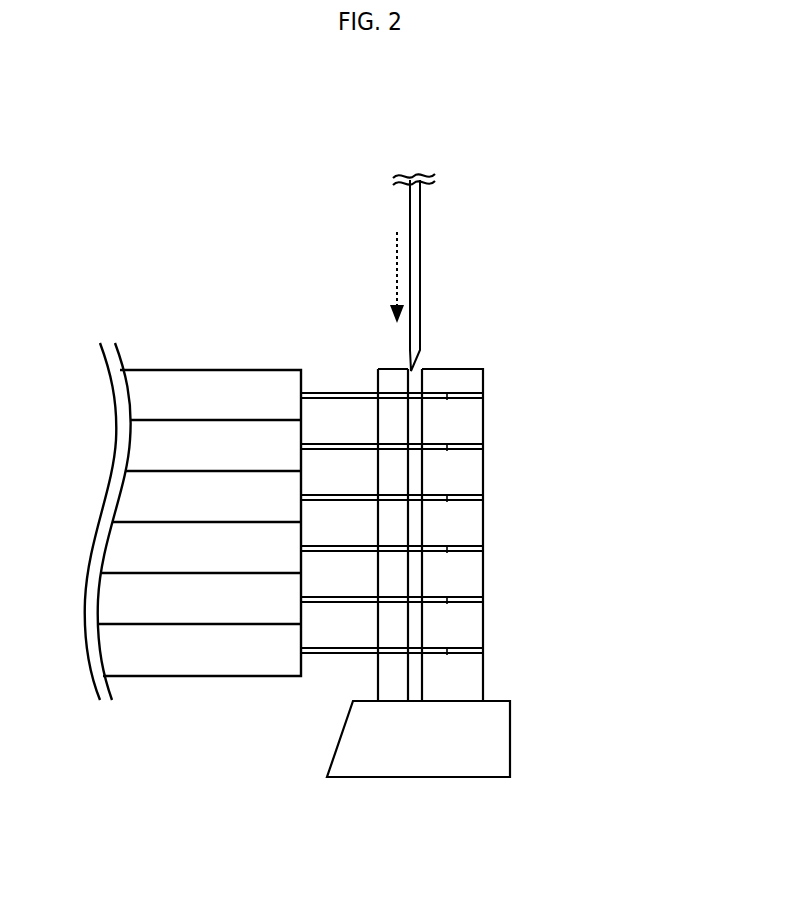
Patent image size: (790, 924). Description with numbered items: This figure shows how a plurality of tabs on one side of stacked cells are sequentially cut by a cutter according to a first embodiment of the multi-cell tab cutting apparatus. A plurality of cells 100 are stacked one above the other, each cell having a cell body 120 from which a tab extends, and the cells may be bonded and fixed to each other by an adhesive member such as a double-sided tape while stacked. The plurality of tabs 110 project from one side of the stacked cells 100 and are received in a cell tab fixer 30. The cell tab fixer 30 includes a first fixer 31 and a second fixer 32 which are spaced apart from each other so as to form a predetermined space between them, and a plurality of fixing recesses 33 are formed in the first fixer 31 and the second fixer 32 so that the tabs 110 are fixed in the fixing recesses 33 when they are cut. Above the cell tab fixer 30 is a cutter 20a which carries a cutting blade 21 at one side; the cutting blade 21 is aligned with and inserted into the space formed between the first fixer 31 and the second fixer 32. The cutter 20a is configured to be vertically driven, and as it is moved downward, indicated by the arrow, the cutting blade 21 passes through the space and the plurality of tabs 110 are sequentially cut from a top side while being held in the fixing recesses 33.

The cells 100 is at (315, 262).
The cell body 120 is at (240, 370).
The tabs 110 is at (337, 392).
The cutting blade 21 is at (421, 284).
The cutter 20a is at (450, 220).
The cell tab fixer 30 is at (590, 330).
The first fixer 31 is at (402, 378).
The second fixer 32 is at (475, 421).
The fixing recesses 33 is at (483, 397).